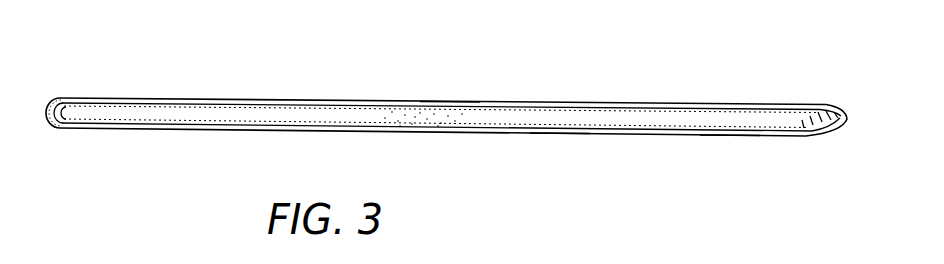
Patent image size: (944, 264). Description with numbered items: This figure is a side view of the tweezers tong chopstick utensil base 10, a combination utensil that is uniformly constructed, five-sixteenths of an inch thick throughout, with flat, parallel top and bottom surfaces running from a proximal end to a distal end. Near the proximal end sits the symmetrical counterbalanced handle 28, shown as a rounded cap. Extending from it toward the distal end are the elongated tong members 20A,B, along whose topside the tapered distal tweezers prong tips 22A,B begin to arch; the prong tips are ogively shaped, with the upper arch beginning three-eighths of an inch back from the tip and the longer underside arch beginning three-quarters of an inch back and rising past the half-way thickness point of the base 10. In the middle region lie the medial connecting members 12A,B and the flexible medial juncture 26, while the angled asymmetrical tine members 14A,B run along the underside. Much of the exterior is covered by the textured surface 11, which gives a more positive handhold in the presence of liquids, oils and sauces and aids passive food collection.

The tweezers tong chopstick utensil base 10 is at (173, 131).
The textured surface 11 is at (208, 108).
The medial connecting members 12A,B is at (452, 100).
The angled asymmetrical tine members 14A,B is at (560, 137).
The elongated tong members 20A,B is at (737, 137).
The tapered distal tweezers prong tips 22A,B is at (841, 130).
The flexible medial juncture 26 is at (400, 100).
The symmetrical counterbalanced handle 28 is at (57, 128).